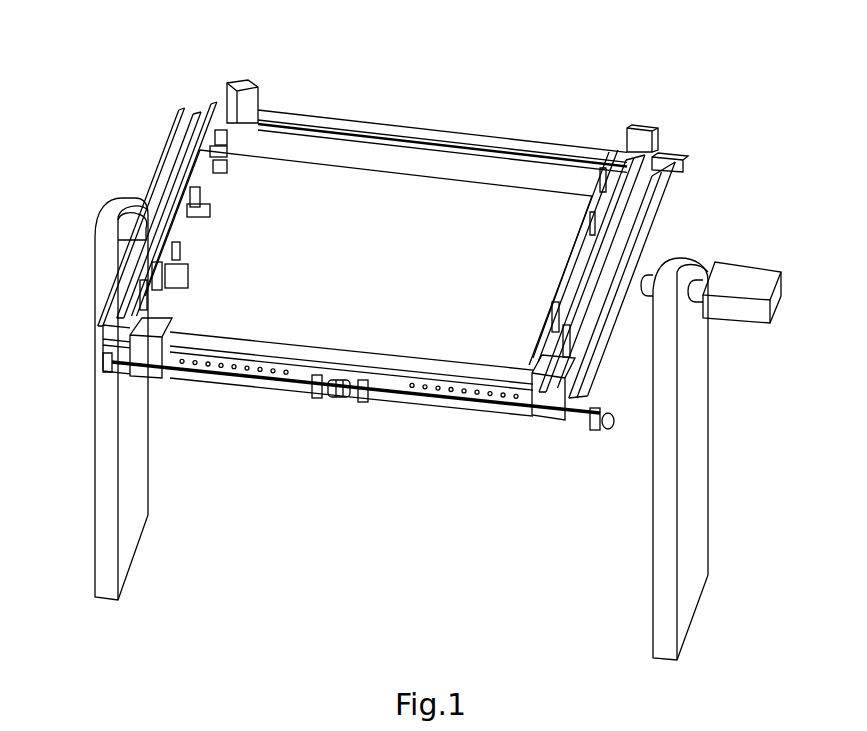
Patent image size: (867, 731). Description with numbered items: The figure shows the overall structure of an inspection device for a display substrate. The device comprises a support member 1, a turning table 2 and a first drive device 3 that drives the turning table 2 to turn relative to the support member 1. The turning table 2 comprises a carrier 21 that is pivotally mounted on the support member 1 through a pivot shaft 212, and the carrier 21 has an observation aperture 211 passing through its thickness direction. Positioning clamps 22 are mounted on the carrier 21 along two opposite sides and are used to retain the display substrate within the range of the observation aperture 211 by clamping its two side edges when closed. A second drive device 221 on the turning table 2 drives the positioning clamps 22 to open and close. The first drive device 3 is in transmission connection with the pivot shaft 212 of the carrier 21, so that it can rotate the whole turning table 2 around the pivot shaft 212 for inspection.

The support member 1 is at (687, 520).
The turning table 2 is at (470, 43).
The carrier 21 is at (343, 153).
The observation aperture 211 is at (298, 312).
The pivot shaft 212 is at (138, 224).
The positioning clamps 22 is at (195, 177).
The second drive device 221 is at (577, 272).
The first drive device 3 is at (760, 312).